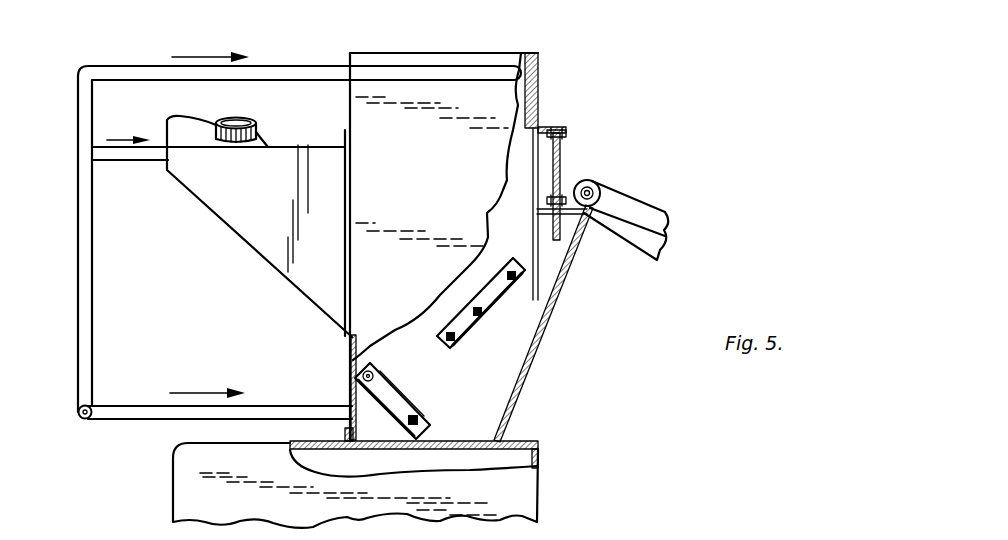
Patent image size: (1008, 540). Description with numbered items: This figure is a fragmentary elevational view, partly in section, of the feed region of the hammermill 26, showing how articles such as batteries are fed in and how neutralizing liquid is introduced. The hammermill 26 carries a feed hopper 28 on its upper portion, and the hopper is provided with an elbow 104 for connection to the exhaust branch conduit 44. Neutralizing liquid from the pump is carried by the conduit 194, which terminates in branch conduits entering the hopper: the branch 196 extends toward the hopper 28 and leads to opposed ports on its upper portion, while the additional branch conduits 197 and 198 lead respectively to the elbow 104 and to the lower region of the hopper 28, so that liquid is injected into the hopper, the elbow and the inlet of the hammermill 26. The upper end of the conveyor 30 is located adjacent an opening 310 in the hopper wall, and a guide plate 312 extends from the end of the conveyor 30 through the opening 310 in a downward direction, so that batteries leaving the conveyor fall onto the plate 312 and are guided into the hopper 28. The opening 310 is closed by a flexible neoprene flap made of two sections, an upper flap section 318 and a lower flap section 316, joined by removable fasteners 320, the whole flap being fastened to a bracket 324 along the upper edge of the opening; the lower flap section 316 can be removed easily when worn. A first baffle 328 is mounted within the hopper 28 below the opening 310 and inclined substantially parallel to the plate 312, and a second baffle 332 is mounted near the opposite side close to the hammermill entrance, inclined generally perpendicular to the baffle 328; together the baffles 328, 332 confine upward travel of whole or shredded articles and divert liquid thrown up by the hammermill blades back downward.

The branch conduit 196 is at (142, 66).
The branch conduit 197 is at (124, 161).
The branch conduit 198 is at (142, 405).
The conduit 194 is at (79, 420).
The elbow 104 is at (248, 222).
The exhaust branch conduit 44 is at (262, 133).
The feed hopper 28 is at (485, 53).
The hammermill 26 is at (158, 495).
The opening 310 is at (533, 152).
The bracket 324 is at (560, 127).
The mounting plate 318 is at (562, 157).
The removable fasteners 320 is at (547, 200).
The lower flap section 316 is at (548, 223).
The conveyor 30 is at (665, 213).
The guide plate 312 is at (572, 252).
The first baffle 328 is at (520, 315).
The second baffle 332 is at (390, 392).